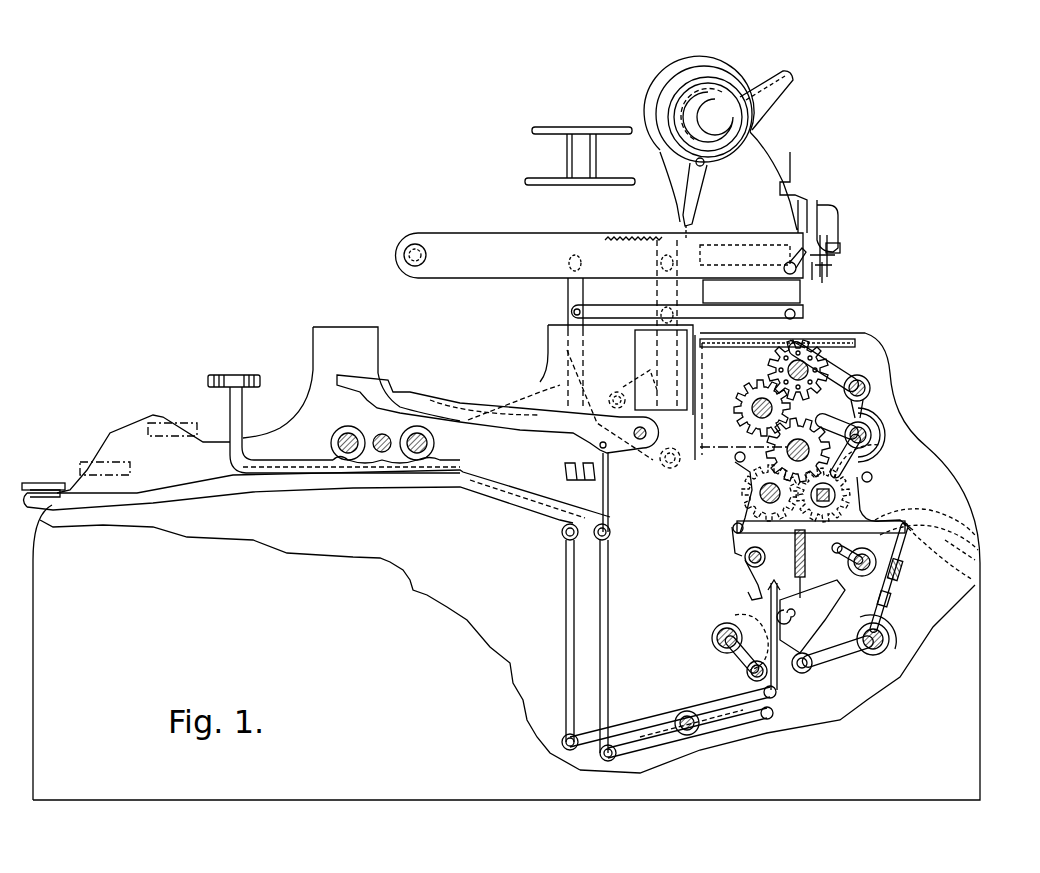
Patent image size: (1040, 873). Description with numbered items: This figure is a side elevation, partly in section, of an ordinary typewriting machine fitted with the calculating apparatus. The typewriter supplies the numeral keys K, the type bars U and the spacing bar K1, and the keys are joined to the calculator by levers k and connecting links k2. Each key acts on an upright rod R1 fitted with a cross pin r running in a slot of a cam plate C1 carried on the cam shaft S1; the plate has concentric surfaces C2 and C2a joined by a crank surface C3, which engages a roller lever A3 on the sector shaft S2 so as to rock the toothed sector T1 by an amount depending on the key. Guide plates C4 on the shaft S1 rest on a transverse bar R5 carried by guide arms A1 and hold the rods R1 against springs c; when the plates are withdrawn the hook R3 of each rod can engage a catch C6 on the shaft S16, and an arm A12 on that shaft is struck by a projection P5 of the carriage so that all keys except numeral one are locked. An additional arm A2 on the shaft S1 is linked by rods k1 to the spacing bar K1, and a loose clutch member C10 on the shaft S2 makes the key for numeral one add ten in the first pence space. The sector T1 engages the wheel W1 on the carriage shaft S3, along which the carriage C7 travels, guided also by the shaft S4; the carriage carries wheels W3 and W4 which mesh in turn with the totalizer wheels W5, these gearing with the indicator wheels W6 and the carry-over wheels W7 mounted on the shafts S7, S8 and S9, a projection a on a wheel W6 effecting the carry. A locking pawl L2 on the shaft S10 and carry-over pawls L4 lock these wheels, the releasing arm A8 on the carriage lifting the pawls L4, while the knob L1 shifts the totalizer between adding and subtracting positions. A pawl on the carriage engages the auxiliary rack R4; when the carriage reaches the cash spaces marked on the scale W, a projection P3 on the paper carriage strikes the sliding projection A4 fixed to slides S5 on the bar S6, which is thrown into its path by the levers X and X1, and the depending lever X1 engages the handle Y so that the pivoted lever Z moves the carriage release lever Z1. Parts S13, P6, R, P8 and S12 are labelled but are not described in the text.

The pivoted lever Z is at (676, 235).
The carriage release lever Z1 is at (703, 177).
The lever X is at (597, 313).
The depending lever X1 is at (590, 362).
The handle Y is at (633, 388).
The type bar U is at (435, 402).
The numeral key K is at (334, 424).
The spacing bar K1 is at (316, 592).
The bar S6 is at (828, 225).
The stop or projection P3 is at (842, 248).
The sliding projection A4 is at (830, 258).
The slide S5 is at (818, 278).
The shaft S9 is at (808, 350).
The carry over wheel W7 is at (775, 367).
The projection a is at (778, 386).
The locking pawl L4 is at (835, 372).
The shaft S13 is at (870, 386).
The wheel W6 is at (742, 400).
The shaft S8 is at (752, 405).
The totalizer wheel W5 is at (765, 438).
The scale W is at (798, 450).
The locking pawl L2 is at (842, 422).
The releasing arm A8 is at (880, 432).
The shaft S10 is at (873, 437).
The wheel W3 is at (860, 462).
The shaft S7 is at (735, 457).
The carriage C7 is at (738, 462).
The secondary or guide shaft S4 is at (752, 492).
The wheel W4 is at (752, 512).
The wheel W1 is at (845, 505).
The carriage shaft S3 is at (873, 477).
The ratchet P6 is at (905, 530).
The toothed sector T1 is at (970, 548).
The rack R is at (821, 587).
The auxiliary rack R4 is at (787, 553).
The hook R3 is at (785, 579).
The projection P5 is at (730, 540).
The arm A12 is at (745, 560).
The shaft S16 is at (740, 565).
The hooked stop or catch C6 is at (750, 590).
The pawl P8 is at (835, 555).
The shaft S12 is at (869, 553).
The knob L1 is at (913, 560).
The cam plate C1 is at (820, 598).
The concentric surface C2a is at (865, 628).
The additional arm A2 is at (713, 634).
The spring c is at (786, 625).
The cross pin r is at (777, 635).
The loose clutch member C10 is at (890, 643).
The cam or crank surface C3 is at (855, 647).
The concentric surface C2 is at (807, 673).
The cam shaft S1 is at (720, 648).
The guide plate C4 is at (740, 660).
The guide arm A1 is at (750, 678).
The sector shaft S2 is at (870, 647).
The roller lever A3 is at (847, 653).
The transverse bar or shaft R5 is at (757, 683).
The upright rod R1 is at (785, 690).
The lever k is at (640, 743).
The rod or link k1 is at (590, 740).
The connecting rod or link k2 is at (608, 640).